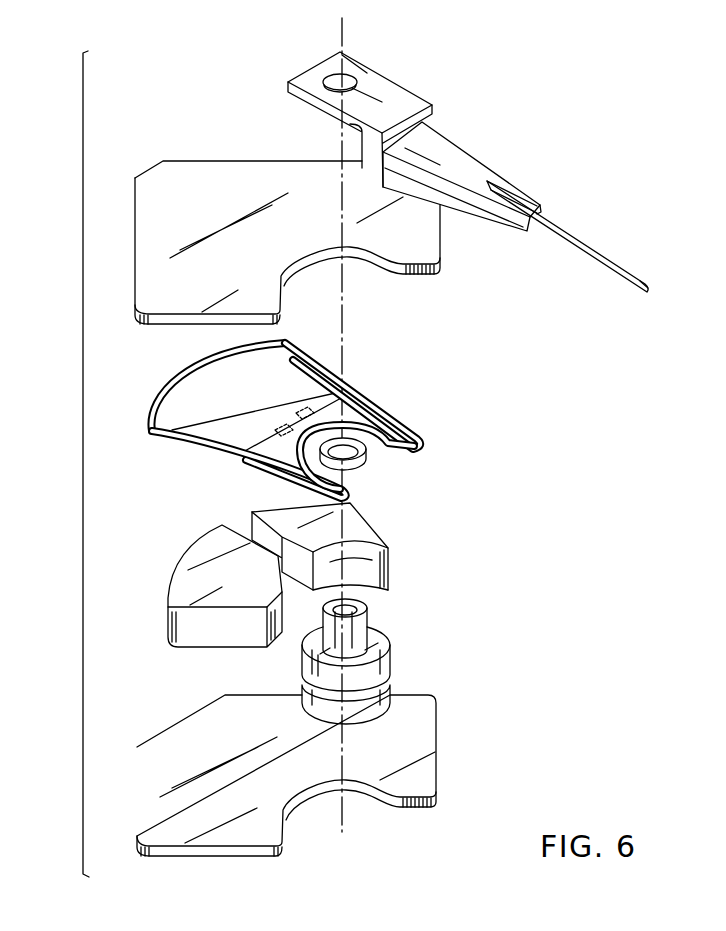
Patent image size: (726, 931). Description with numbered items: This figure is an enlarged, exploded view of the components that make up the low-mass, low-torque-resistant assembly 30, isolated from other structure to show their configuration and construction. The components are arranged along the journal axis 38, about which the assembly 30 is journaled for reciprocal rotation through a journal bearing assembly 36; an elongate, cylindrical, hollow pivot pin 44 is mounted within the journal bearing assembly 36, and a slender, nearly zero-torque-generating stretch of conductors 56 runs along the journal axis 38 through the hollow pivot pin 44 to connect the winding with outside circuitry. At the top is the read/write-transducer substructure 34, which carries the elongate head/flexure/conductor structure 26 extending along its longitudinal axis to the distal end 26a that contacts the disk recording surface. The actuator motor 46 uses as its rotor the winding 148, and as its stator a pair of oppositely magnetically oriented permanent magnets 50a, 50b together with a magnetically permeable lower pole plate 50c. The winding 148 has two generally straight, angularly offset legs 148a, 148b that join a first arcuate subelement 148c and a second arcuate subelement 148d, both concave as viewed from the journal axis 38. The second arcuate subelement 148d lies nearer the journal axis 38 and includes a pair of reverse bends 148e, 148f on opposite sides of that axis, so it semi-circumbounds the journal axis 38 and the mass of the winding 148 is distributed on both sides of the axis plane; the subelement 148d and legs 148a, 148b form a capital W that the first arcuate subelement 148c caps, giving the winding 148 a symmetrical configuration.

The assembly 30 is at (75, 474).
The actuator motor 46 is at (191, 80).
The journal axis 38 is at (345, 48).
The read/write-transducer substructure 34 is at (495, 157).
The head/flexure/conductor structure 26 is at (570, 227).
The distal end 26a is at (650, 288).
The winding 148 is at (320, 407).
The leg 148a is at (240, 462).
The leg 148b is at (352, 396).
The first arcuate subelement 148c is at (200, 362).
The second arcuate subelement 148d is at (305, 412).
The reverse bend 148e is at (352, 493).
The reverse bend 148f is at (420, 448).
The permanent magnet 50a is at (183, 594).
The permanent magnet 50b is at (366, 562).
The conductors 56 is at (343, 568).
The pivot pin 44 is at (356, 634).
The journal bearing assembly 36 is at (420, 667).
The lower pole plate 50c is at (181, 738).